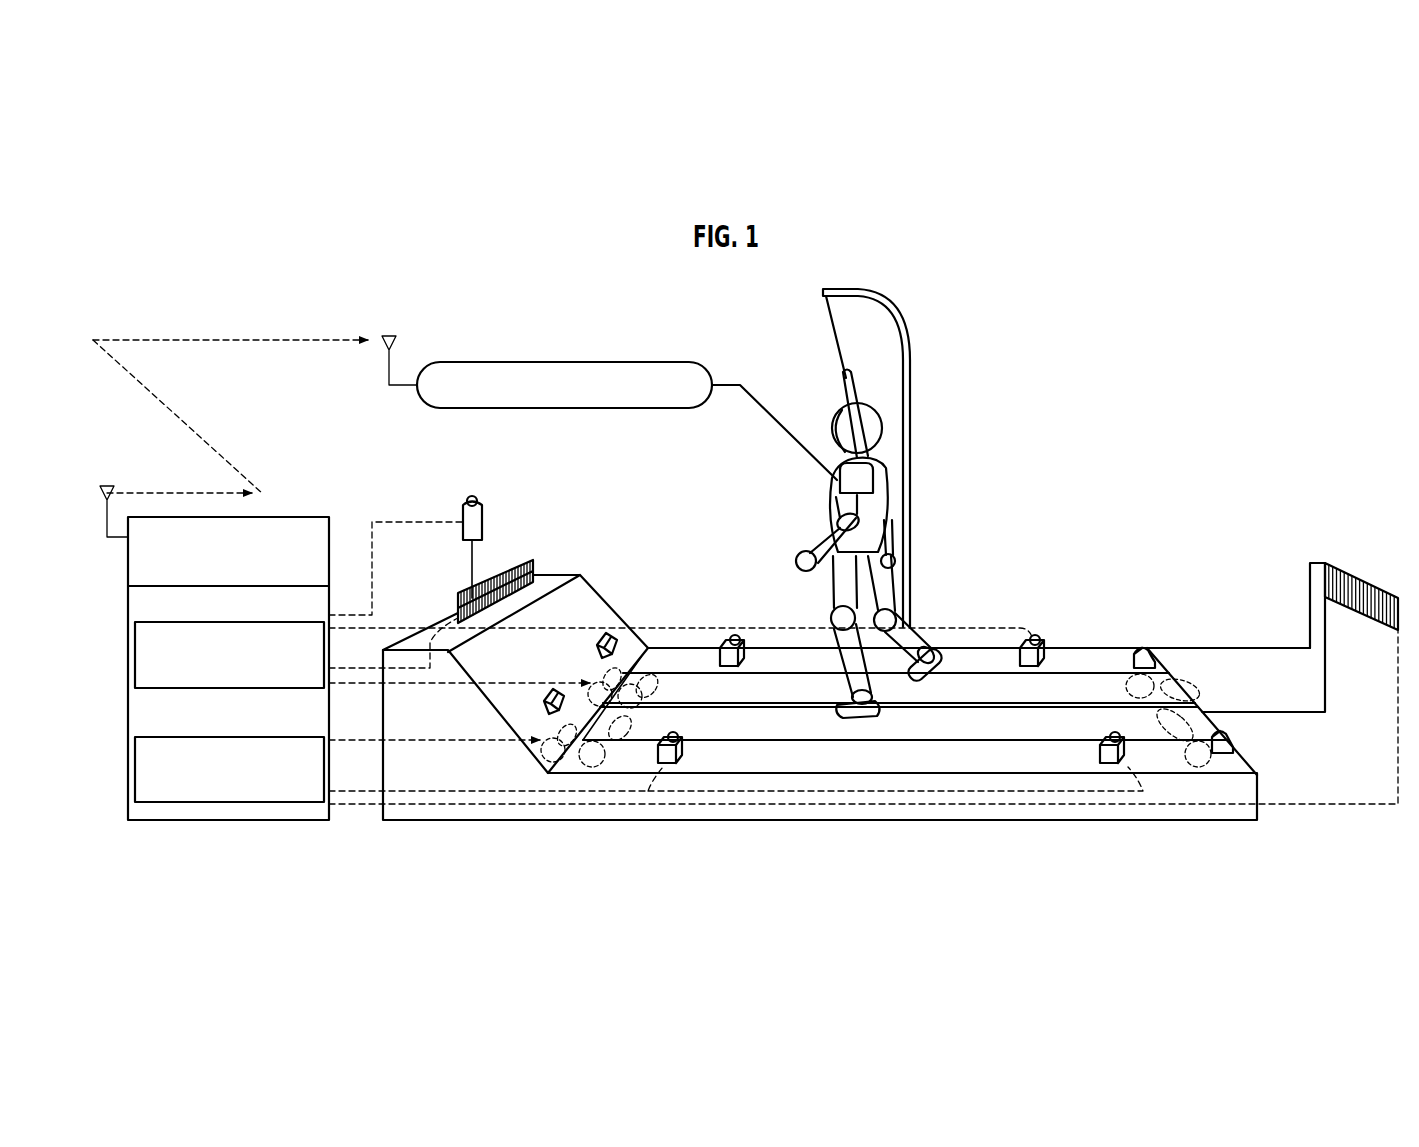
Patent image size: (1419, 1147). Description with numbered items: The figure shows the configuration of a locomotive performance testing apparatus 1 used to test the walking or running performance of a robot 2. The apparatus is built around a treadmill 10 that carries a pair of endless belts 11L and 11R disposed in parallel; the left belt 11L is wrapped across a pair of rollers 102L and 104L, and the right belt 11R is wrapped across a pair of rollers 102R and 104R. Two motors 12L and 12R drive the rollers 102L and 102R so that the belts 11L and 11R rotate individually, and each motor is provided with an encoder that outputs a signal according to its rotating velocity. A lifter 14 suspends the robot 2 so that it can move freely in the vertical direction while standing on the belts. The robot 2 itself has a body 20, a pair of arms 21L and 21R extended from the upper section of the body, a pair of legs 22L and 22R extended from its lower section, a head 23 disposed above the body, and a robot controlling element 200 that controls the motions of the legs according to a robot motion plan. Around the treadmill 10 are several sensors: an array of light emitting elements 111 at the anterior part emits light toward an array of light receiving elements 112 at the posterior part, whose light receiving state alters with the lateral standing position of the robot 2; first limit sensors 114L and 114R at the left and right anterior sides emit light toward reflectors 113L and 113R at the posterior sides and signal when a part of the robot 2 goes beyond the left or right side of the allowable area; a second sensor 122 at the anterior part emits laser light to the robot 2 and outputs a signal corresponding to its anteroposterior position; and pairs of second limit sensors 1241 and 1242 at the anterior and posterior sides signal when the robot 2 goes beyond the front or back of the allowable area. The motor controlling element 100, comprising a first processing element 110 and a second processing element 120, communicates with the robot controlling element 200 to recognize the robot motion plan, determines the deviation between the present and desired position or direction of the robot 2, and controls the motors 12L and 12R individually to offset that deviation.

The locomotive performance testing apparatus 1 is at (290, 323).
The robot 2 is at (864, 544).
The treadmill 10 is at (1030, 541).
The right endless belt 11R is at (1085, 683).
The left endless belt 11L is at (1098, 717).
The right motor 12R is at (598, 678).
The left motor 12L is at (558, 737).
The lifter 14 is at (918, 326).
The body 20 is at (833, 496).
The left arm 21L is at (828, 540).
The right arm 21R is at (895, 542).
The left leg 22L is at (836, 616).
The right leg 22R is at (893, 618).
The head 23 is at (840, 418).
The motor controlling element 100 is at (242, 517).
The right roller 102R is at (652, 690).
The left roller 102L is at (632, 728).
The right roller 104R is at (1185, 695).
The left roller 104L is at (1190, 723).
The first processing element 110 is at (248, 622).
The array of light emitting elements 111 is at (553, 554).
The array of light receiving elements 112 is at (1354, 569).
The right reflector 113R is at (1163, 658).
The left reflector 113L is at (1248, 752).
The right first limit sensor 114R is at (610, 624).
The left first limit sensor 114L is at (538, 684).
The second processing element 120 is at (248, 737).
The second sensor 122 is at (494, 510).
The robot controlling element 200 is at (655, 362).
The second limit sensor 1241 is at (717, 628).
The second limit sensor 1242 is at (1050, 628).